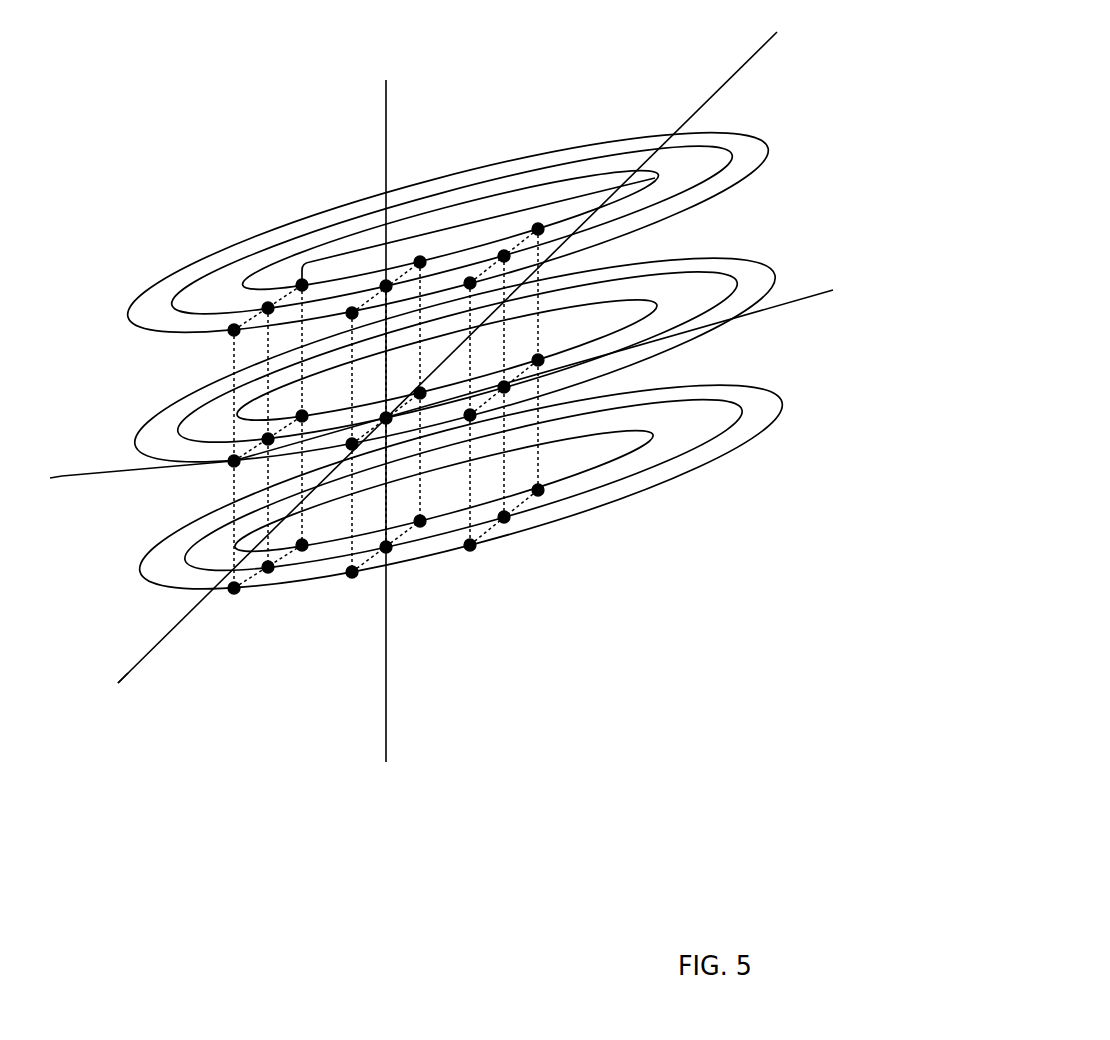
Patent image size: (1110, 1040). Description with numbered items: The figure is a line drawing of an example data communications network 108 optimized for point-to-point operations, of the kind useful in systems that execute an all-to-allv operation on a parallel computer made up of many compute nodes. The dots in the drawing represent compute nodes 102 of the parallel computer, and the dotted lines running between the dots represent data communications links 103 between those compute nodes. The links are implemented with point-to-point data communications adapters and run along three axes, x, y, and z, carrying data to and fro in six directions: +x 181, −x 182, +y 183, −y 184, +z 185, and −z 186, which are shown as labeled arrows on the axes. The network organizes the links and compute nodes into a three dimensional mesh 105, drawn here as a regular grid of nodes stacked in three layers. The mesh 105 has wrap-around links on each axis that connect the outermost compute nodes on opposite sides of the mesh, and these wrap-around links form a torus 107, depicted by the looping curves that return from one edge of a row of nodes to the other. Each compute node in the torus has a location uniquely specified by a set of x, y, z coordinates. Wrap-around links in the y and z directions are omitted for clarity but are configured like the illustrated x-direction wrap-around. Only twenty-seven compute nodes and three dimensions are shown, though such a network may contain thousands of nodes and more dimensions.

The compute nodes 102 is at (539, 496).
The data communications links 103 is at (233, 489).
The three dimensional mesh 105 is at (537, 227).
The torus 107 is at (214, 233).
The data communications network 108 is at (442, 546).
The +x direction 181 is at (882, 317).
The −x direction 182 is at (48, 519).
The +y direction 183 is at (822, 56).
The −y direction 184 is at (113, 734).
The +z direction 185 is at (402, 57).
The −z direction 186 is at (403, 825).